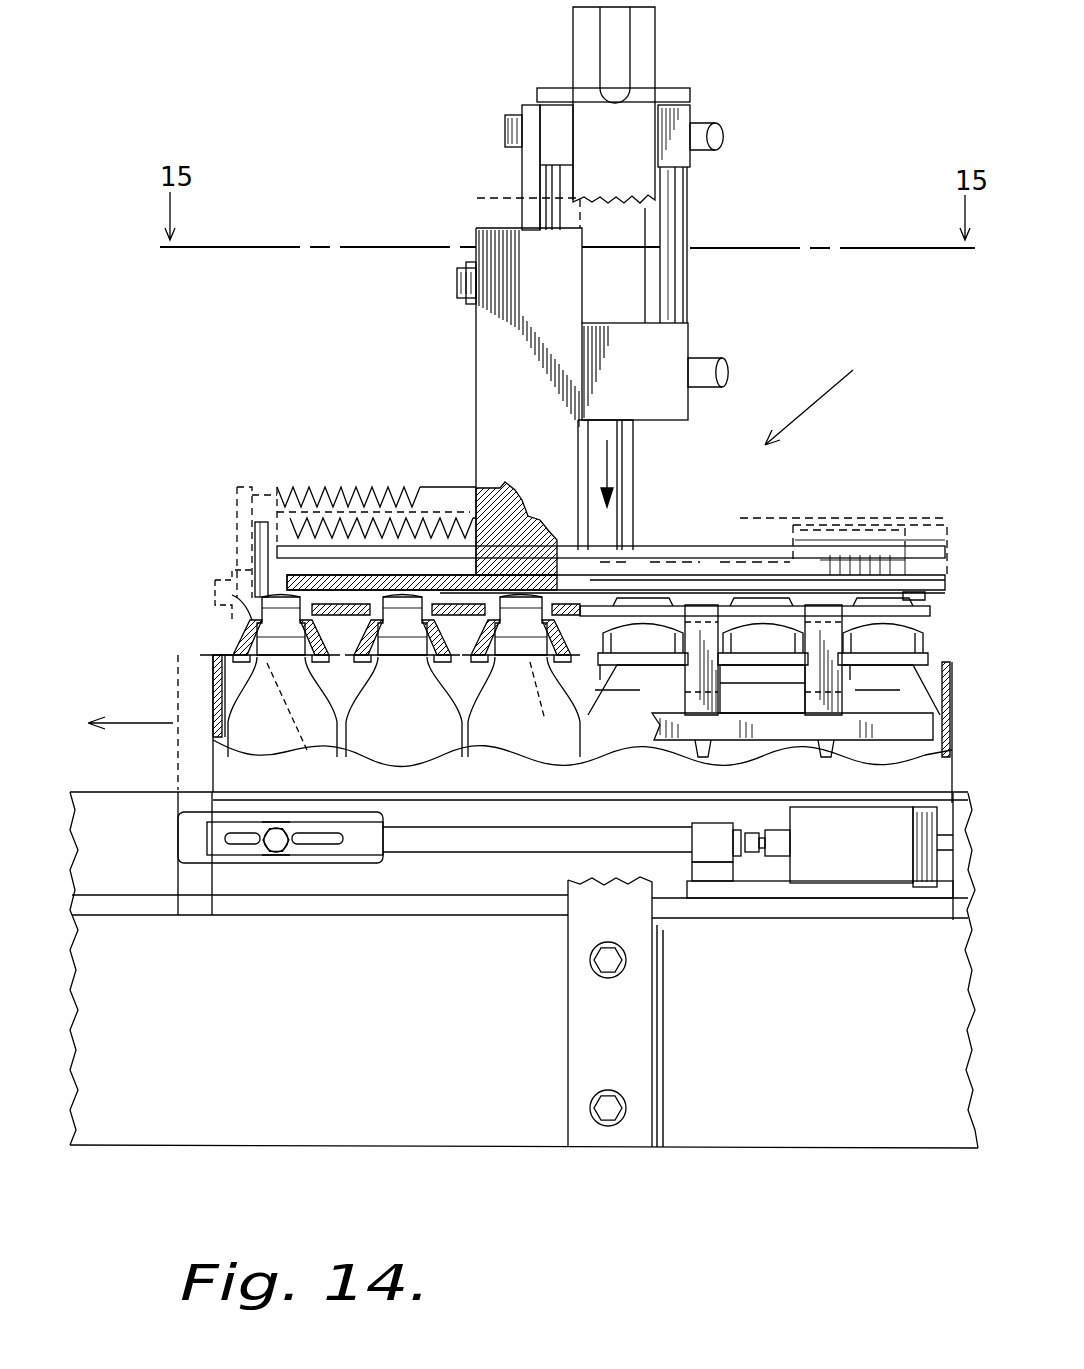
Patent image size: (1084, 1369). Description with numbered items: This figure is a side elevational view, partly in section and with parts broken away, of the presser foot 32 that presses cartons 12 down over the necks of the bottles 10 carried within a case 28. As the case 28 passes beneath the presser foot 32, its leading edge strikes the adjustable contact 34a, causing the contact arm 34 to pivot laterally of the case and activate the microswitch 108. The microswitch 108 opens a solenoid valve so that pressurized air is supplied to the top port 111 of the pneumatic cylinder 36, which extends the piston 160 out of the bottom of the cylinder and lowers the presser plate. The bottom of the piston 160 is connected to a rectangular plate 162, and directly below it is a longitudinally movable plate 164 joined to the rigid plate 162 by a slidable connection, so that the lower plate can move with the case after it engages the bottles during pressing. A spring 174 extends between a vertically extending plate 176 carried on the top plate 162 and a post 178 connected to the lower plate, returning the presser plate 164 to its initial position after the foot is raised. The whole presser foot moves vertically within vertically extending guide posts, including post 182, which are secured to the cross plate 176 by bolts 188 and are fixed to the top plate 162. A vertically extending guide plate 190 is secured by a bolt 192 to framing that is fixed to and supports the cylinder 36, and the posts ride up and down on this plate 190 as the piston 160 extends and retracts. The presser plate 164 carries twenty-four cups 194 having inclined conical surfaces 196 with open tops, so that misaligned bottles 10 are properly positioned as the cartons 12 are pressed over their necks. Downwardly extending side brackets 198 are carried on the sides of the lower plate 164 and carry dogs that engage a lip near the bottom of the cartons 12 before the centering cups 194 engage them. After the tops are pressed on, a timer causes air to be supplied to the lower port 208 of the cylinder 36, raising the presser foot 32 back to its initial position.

The bottles 10 is at (520, 770).
The cartons 12 is at (578, 692).
The case 28 is at (178, 763).
The presser foot 32 is at (824, 398).
The contact arm 34 is at (495, 860).
The adjustable contact 34a is at (272, 856).
The pneumatic cylinder 36 is at (672, 215).
The microswitch 108 is at (820, 852).
The top port 111 is at (705, 130).
The piston 160 is at (630, 470).
The rectangular plate 162 is at (655, 580).
The longitudinally movable plate 164 is at (907, 613).
The spring 174 is at (455, 490).
The vertically extending plate 176 is at (468, 300).
The post 178 is at (262, 545).
The guide post 182 is at (477, 398).
The bolts 188 is at (458, 284).
The guide plate 190 is at (528, 182).
The bolt 192 is at (512, 135).
The cups 194 is at (228, 606).
The inclined conical surfaces 196 is at (375, 660).
The side brackets 198 is at (795, 688).
The lower port 208 is at (705, 360).